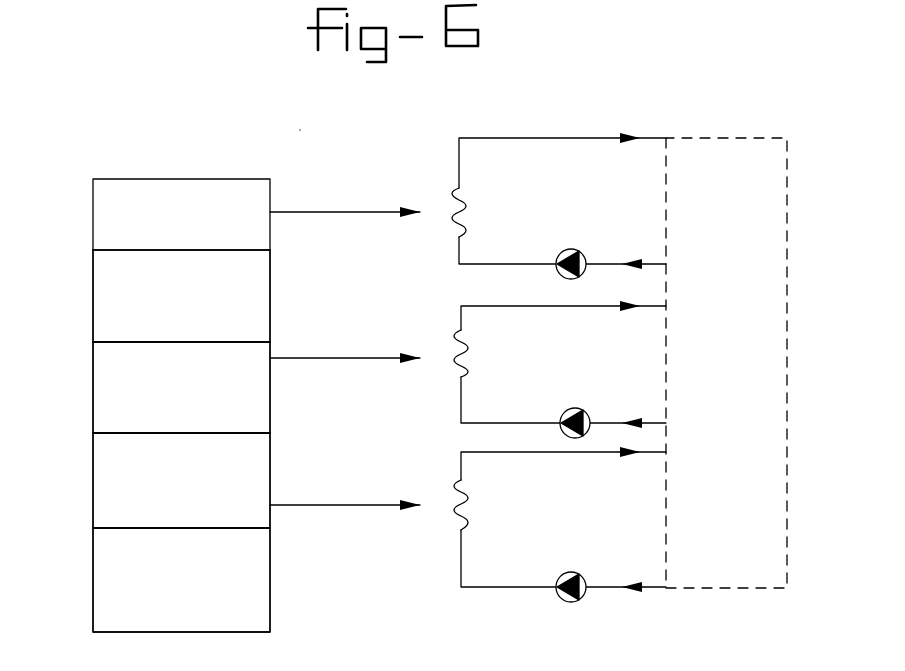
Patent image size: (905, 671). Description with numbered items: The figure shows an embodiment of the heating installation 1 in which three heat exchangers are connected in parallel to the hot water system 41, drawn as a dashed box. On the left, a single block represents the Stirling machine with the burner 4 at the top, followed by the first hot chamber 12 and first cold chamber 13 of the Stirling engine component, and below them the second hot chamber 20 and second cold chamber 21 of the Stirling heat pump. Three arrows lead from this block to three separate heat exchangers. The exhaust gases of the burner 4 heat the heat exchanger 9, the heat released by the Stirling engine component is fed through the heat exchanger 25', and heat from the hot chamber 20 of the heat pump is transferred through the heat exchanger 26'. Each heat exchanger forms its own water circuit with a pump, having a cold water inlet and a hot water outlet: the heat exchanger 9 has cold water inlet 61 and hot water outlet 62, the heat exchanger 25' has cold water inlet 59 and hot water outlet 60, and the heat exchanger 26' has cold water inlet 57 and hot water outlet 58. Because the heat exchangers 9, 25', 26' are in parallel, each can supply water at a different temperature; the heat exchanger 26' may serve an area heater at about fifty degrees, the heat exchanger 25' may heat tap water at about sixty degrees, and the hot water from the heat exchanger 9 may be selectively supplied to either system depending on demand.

The heating installation 1 is at (355, 172).
The burner 4 is at (108, 220).
The first hot chamber 12 is at (110, 296).
The first cold chamber 13 is at (106, 378).
The second hot chamber 20 is at (106, 473).
The second cold chamber 21 is at (110, 563).
The heat exchanger 9 is at (463, 198).
The hot water outlet 62 is at (556, 138).
The cold water inlet 61 is at (518, 264).
The hot water outlet 60 is at (498, 306).
The heat exchanger 25' is at (490, 359).
The cold water inlet 59 is at (514, 423).
The hot water outlet 58 is at (482, 452).
The heat exchanger 26' is at (491, 510).
The cold water inlet 57 is at (490, 587).
The hot water system 41 is at (728, 140).